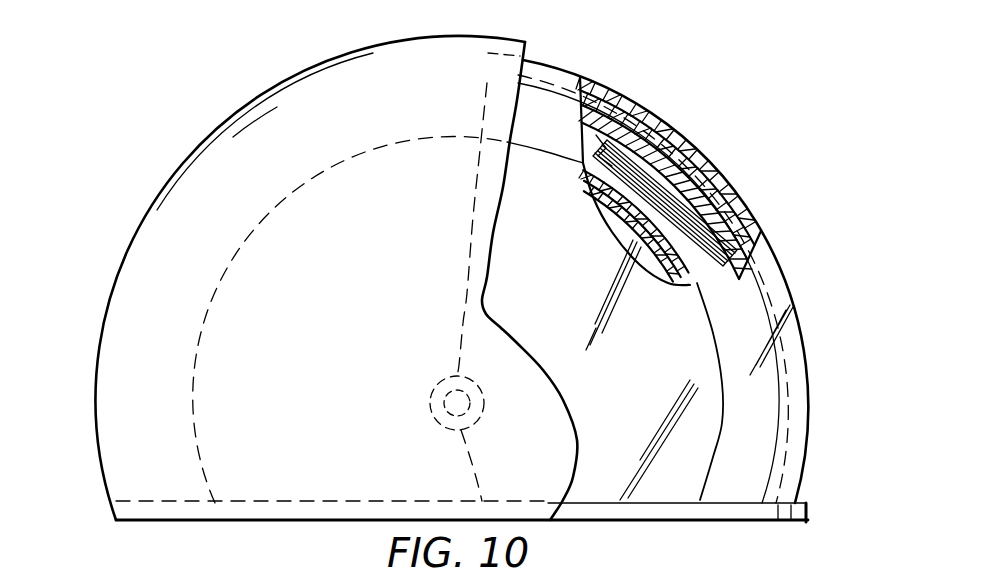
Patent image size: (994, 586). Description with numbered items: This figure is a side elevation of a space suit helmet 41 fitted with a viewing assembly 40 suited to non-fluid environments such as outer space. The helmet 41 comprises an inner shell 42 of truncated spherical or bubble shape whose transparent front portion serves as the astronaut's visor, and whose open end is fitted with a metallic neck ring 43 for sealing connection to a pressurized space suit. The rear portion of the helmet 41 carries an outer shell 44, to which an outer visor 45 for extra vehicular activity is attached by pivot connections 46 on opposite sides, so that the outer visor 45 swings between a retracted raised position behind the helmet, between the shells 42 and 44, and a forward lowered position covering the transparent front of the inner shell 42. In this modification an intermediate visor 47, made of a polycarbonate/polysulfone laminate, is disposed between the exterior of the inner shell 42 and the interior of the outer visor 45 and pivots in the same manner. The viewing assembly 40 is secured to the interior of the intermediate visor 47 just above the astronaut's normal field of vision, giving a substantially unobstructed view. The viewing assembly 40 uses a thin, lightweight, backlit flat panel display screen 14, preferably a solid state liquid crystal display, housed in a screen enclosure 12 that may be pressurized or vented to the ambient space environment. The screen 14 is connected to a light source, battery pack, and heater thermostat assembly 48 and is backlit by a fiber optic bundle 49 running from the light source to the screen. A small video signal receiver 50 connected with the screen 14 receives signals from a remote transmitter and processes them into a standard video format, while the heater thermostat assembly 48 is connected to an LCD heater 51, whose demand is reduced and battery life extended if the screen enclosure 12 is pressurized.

The helmet 41 is at (104, 168).
The inner shell 42 is at (320, 173).
The neck ring 43 is at (808, 507).
The outer shell 44 is at (230, 115).
The outer visor 45 is at (560, 58).
The pivot connections 46 is at (443, 423).
The intermediate visor 47 is at (637, 107).
The light source, battery pack, and heater thermostat assembly 48 is at (712, 265).
The fiber optic bundle 49 is at (700, 163).
The video signal receiver 50 is at (603, 157).
The LCD heater 51 is at (660, 140).
The flat panel display screen 14 is at (600, 207).
The screen enclosure 12 is at (630, 233).
The viewing assembly 40 is at (697, 270).